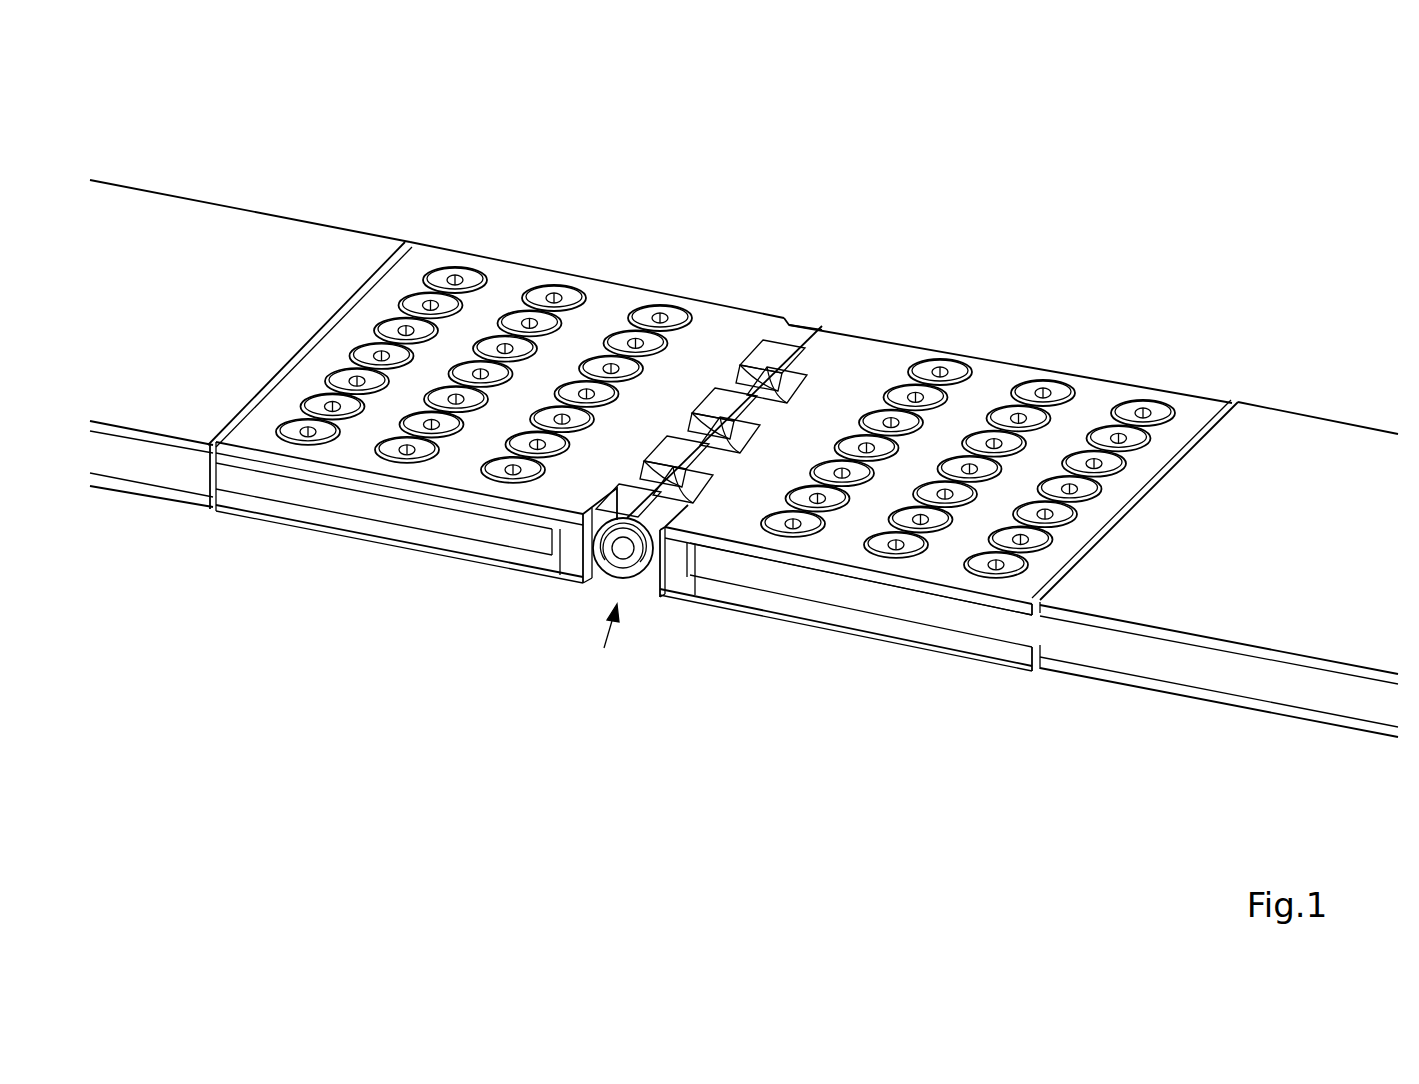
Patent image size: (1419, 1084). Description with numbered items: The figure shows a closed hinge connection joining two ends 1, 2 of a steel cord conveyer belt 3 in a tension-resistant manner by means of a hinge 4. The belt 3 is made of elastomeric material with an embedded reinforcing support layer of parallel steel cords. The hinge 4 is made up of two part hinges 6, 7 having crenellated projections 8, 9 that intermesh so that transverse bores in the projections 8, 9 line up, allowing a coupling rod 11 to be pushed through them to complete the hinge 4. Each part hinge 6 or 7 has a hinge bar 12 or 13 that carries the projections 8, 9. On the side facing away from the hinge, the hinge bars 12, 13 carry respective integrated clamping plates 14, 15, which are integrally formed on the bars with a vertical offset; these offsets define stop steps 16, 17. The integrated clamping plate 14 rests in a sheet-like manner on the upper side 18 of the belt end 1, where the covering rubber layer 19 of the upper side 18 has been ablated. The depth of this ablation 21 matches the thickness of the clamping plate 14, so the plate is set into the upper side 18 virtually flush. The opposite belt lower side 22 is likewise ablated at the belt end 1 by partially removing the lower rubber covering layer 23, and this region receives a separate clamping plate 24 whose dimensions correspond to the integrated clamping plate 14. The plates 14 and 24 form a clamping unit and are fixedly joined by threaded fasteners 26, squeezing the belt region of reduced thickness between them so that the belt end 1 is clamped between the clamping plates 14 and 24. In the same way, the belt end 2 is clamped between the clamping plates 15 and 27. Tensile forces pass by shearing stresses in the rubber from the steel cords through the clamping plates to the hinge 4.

The belt end 1 is at (375, 426).
The belt end 2 is at (1215, 606).
The steel cord conveyer belt 3 is at (231, 336).
The hinge 4 is at (603, 642).
The part hinge 6 is at (803, 266).
The part hinge 7 is at (724, 512).
The crenellated projections 8 is at (700, 350).
The crenellated projections 9 is at (795, 363).
The coupling rod 11 is at (585, 599).
The hinge bar 12 is at (531, 579).
The hinge bar 13 is at (696, 607).
The integrated clamping plate 14 is at (384, 552).
The integrated clamping plate 15 is at (852, 634).
The stop step 16 is at (472, 595).
The stop step 17 is at (738, 636).
The upper side 18 is at (799, 280).
The covering rubber layer 19 is at (624, 610).
The ablation 21 is at (255, 578).
The belt lower side 22 is at (744, 644).
The lower rubber covering layer 23 is at (744, 622).
The separate clamping plate 24 is at (399, 567).
The threaded fasteners 26 is at (725, 359).
The clamping plate 27 is at (846, 652).